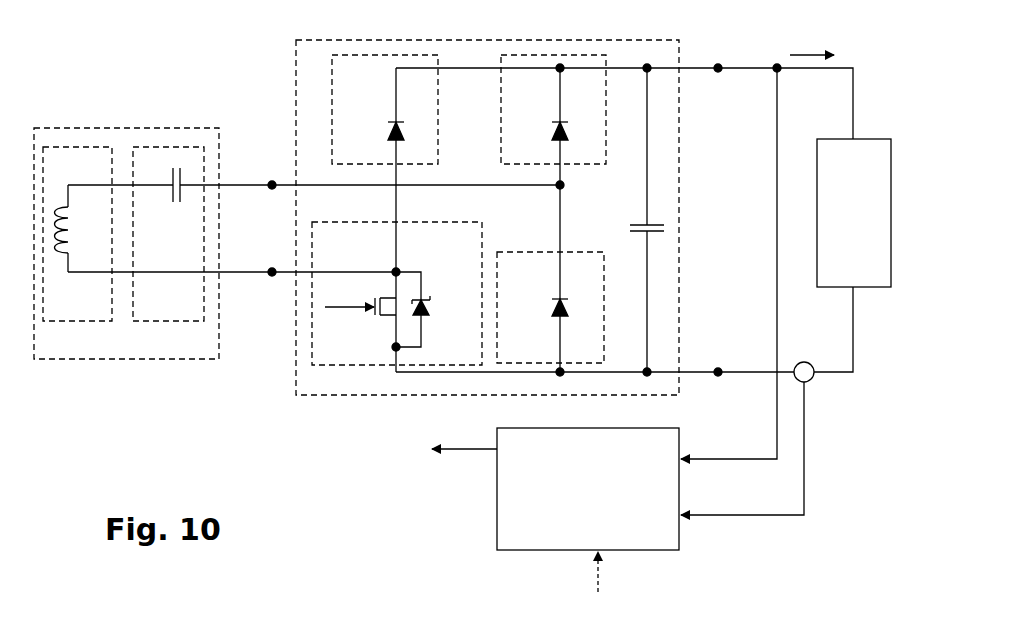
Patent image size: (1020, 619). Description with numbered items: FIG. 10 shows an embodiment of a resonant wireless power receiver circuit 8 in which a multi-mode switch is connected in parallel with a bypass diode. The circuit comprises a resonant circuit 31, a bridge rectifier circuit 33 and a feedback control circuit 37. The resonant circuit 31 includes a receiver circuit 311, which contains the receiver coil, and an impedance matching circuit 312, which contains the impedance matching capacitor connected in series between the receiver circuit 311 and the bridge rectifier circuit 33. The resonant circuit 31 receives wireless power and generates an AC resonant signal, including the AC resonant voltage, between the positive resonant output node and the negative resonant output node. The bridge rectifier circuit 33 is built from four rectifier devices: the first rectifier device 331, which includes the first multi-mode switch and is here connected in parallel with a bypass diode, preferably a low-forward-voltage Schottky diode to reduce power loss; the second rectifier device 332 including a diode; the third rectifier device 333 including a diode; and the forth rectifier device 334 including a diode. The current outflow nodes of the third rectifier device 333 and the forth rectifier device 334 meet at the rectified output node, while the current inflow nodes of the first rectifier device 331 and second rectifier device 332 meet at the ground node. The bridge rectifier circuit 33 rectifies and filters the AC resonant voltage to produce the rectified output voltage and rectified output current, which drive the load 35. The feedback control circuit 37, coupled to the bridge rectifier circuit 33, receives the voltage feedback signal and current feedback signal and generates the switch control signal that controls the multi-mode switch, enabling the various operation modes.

The resonant wireless power receiver circuit 8 is at (248, 57).
The resonant circuit 31 is at (194, 359).
The receiver circuit 311 is at (104, 321).
The impedance matching circuit 312 is at (194, 321).
The bridge rectifier circuit 33 is at (377, 40).
The first rectifier device 331 is at (362, 365).
The second rectifier device 332 is at (548, 363).
The third rectifier device 333 is at (386, 164).
The forth rectifier device 334 is at (554, 164).
The load 35 is at (854, 213).
The feedback control circuit 37 is at (588, 489).